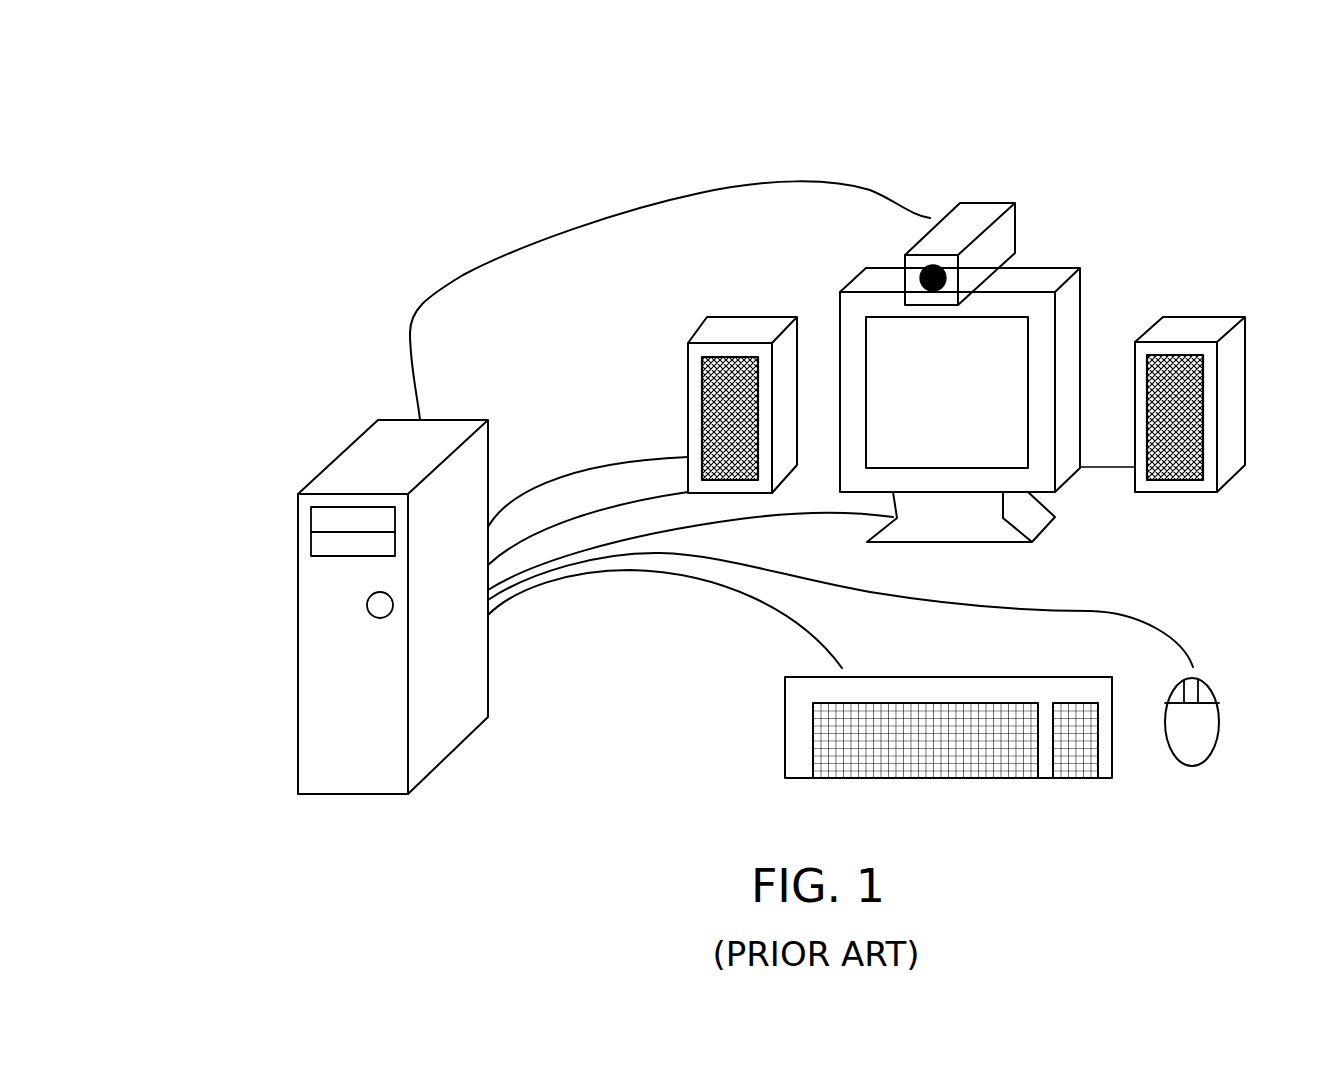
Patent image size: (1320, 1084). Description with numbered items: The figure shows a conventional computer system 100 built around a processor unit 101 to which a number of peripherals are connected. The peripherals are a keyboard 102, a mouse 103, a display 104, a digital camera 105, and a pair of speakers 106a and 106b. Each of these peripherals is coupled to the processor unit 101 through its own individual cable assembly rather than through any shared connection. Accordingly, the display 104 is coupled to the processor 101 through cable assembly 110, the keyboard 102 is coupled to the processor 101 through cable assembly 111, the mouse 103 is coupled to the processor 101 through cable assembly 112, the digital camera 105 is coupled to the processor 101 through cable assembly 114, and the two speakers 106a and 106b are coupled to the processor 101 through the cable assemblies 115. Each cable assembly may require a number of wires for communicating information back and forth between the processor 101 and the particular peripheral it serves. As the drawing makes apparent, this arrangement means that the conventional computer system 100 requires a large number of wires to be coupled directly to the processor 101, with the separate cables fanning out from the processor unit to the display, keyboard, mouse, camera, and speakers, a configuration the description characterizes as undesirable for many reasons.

The computer system 100 is at (397, 217).
The processor unit 101 is at (332, 622).
The keyboard 102 is at (807, 737).
The mouse 103 is at (1203, 730).
The display 104 is at (1075, 315).
The digital camera 105 is at (972, 215).
The speaker 106a is at (1193, 323).
The speaker 106b is at (746, 333).
The cable assembly 110 is at (834, 517).
The cable assembly 111 is at (685, 572).
The cable assembly 112 is at (1060, 610).
The cable assembly 114 is at (625, 215).
The cable assemblies 115 is at (568, 512).